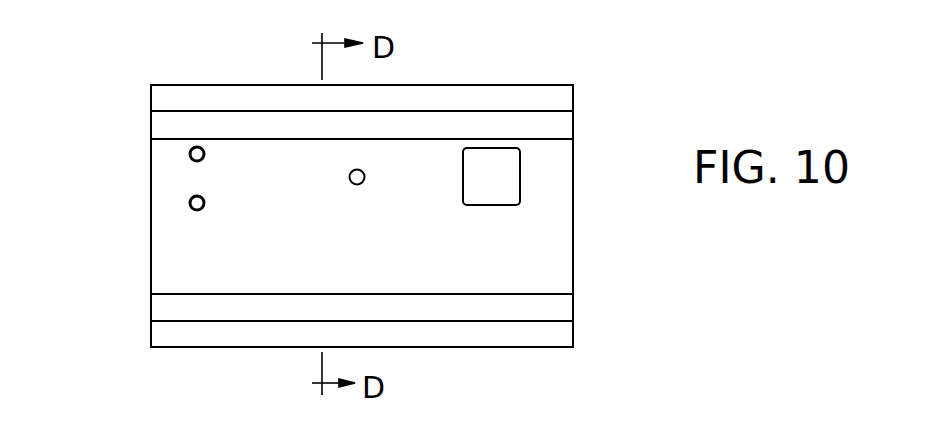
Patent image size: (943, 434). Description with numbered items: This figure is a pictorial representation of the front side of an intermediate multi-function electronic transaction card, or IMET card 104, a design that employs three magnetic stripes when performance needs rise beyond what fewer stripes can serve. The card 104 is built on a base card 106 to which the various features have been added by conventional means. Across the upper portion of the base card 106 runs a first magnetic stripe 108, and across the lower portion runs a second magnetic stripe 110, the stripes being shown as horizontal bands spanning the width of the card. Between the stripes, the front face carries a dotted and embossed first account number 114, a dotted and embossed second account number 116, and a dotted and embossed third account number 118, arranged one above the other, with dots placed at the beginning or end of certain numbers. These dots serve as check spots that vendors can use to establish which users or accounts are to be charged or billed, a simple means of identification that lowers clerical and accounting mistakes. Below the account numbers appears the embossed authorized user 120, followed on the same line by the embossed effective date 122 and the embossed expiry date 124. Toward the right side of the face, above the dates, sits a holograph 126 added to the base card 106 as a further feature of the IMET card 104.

The IMET card 104 is at (198, 368).
The base card 106 is at (528, 82).
The first magnetic stripe 108 is at (573, 123).
The second magnetic stripe 110 is at (573, 305).
The first account number 114 is at (229, 152).
The second account number 116 is at (229, 180).
The third account number 118 is at (229, 216).
The authorized user 120 is at (229, 237).
The effective date 122 is at (412, 243).
The expiry date 124 is at (562, 238).
The holograph 126 is at (521, 185).